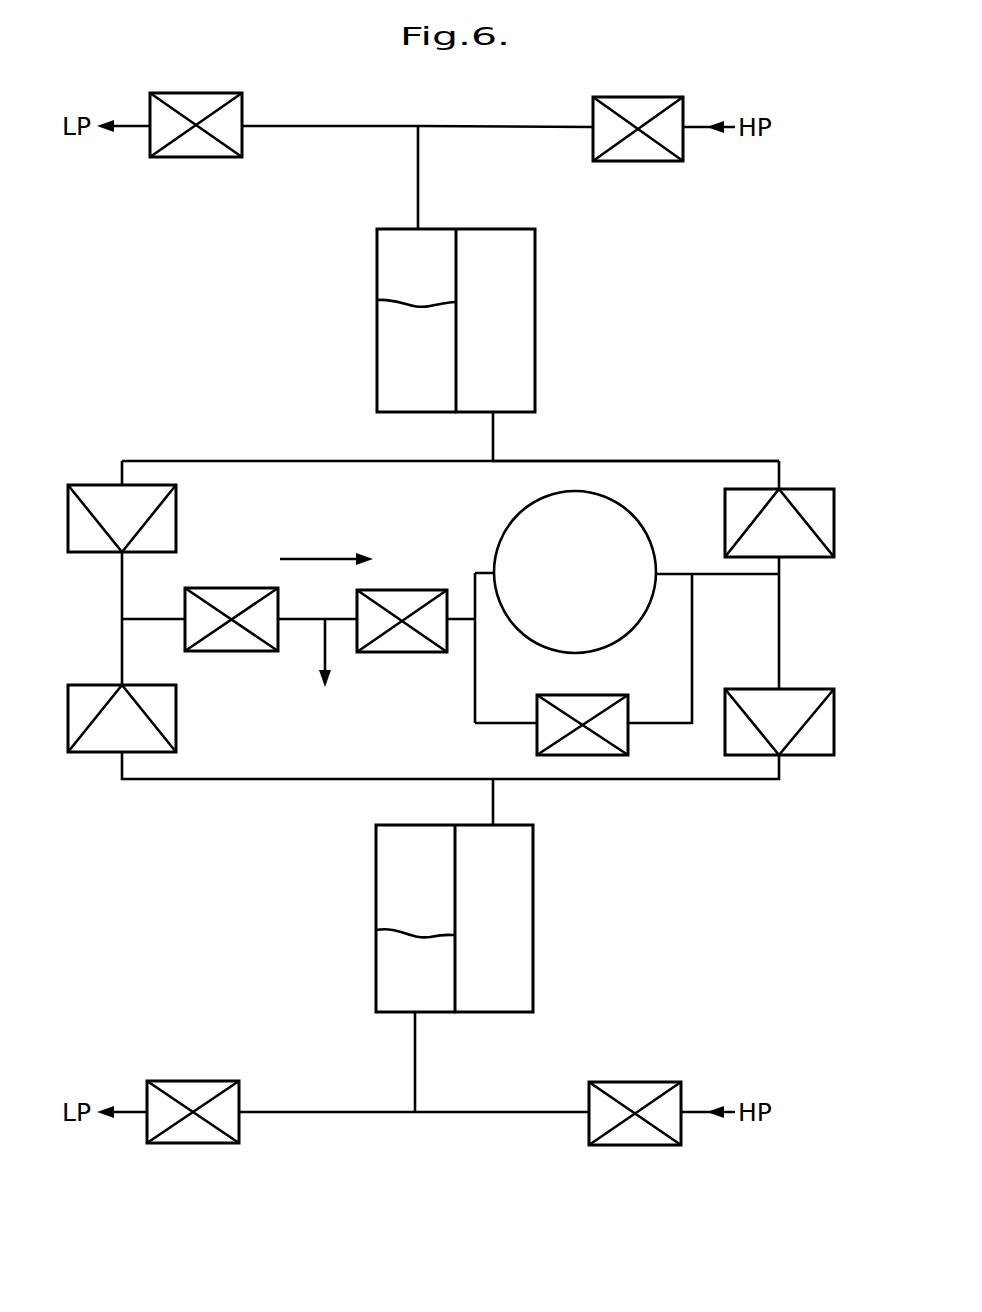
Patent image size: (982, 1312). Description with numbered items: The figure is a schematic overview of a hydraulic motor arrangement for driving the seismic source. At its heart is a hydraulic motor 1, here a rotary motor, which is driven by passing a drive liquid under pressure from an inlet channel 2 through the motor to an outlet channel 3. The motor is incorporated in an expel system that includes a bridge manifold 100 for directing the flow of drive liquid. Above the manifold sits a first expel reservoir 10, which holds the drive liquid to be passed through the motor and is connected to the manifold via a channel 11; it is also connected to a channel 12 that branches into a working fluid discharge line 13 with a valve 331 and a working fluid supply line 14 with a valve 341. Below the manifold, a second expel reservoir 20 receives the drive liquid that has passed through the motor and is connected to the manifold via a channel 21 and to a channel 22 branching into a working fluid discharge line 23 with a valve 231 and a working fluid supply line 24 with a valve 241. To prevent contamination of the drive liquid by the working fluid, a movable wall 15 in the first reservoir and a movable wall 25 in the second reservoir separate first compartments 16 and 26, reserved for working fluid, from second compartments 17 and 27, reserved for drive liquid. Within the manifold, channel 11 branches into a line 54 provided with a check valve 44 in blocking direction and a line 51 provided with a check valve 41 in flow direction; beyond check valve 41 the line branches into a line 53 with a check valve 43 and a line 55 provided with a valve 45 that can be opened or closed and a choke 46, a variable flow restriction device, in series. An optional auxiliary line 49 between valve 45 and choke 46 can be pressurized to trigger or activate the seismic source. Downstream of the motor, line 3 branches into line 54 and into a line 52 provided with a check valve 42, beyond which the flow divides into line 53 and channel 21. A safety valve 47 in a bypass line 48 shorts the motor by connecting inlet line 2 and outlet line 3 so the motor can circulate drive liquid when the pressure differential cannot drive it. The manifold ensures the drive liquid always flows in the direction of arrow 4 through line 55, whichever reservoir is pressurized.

The hydraulic motor 1 is at (584, 589).
The inlet channel 2 is at (480, 572).
The outlet channel 3 is at (672, 573).
The arrow 4 is at (311, 557).
The first expel reservoir 10 is at (456, 320).
The channel 11 is at (493, 440).
The channel 12 is at (445, 192).
The working fluid discharge line 13 is at (312, 126).
The working fluid supply line 14 is at (483, 126).
The movable wall 15 is at (377, 300).
The first compartment 16 is at (432, 396).
The second compartment 17 is at (506, 396).
The second expel reservoir 20 is at (452, 918).
The channel 21 is at (493, 800).
The channel 22 is at (414, 1060).
The working fluid discharge line 23 is at (326, 1110).
The working fluid supply line 24 is at (492, 1110).
The movable wall 25 is at (376, 930).
The first compartment 26 is at (431, 872).
The second compartment 27 is at (507, 872).
The check valve 41 is at (100, 484).
The check valve 42 is at (795, 757).
The check valve 43 is at (100, 753).
The check valve 44 is at (795, 488).
The valve 45 is at (236, 652).
The choke 46 is at (400, 652).
The safety valve 47 is at (612, 695).
The bypass line 48 is at (693, 650).
The auxiliary line 49 is at (318, 648).
The line 51 is at (272, 460).
The line 52 is at (781, 650).
The line 53 is at (120, 652).
The line 54 is at (670, 460).
The line 55 is at (152, 617).
The bridge manifold 100 is at (782, 378).
The valve 231 is at (200, 1080).
The valve 241 is at (625, 1082).
The valve 331 is at (200, 158).
The valve 341 is at (640, 161).